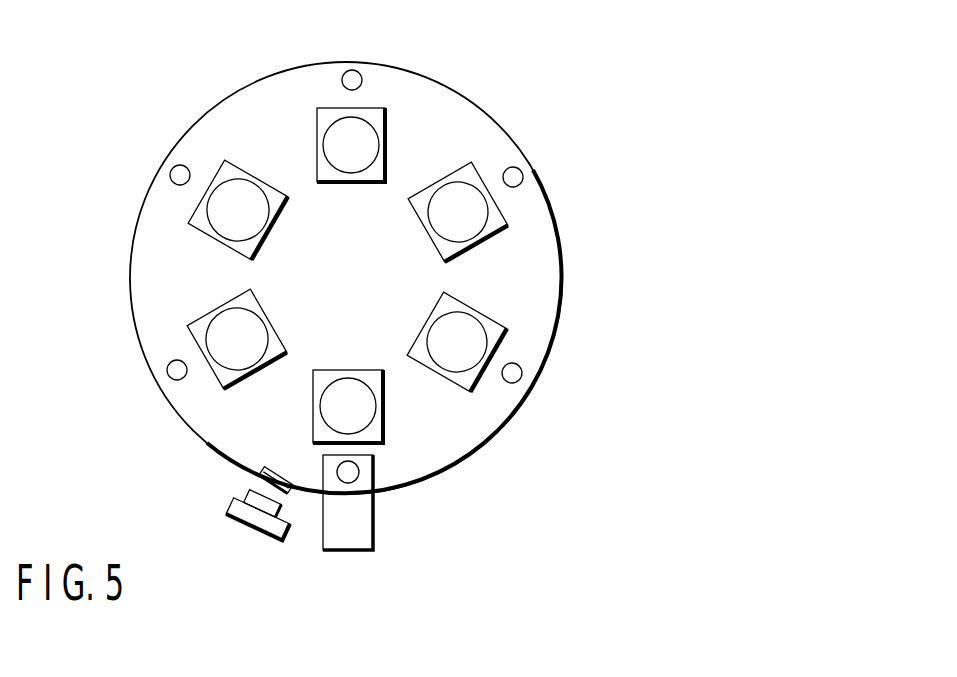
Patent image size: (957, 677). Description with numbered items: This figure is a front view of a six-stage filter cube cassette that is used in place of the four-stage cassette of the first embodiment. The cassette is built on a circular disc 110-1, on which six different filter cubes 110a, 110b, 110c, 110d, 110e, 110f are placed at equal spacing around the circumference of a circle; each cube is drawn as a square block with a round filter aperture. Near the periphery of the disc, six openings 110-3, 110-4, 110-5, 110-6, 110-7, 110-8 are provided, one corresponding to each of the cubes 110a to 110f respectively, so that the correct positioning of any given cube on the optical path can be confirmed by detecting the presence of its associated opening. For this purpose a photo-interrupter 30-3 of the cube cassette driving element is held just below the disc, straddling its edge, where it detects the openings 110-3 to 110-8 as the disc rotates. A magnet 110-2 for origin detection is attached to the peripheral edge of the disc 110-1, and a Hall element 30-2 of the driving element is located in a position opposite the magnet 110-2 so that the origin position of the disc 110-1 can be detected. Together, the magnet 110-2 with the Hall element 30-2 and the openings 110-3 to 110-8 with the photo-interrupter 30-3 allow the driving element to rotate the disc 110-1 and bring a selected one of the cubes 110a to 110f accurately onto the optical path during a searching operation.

The disc 110-1 is at (465, 460).
The magnet 110-2 is at (253, 480).
The opening 110-3 is at (357, 69).
The opening 110-4 is at (523, 174).
The opening 110-5 is at (523, 369).
The opening 110-6 is at (358, 478).
The opening 110-7 is at (167, 375).
The opening 110-8 is at (170, 174).
The cube 110a is at (388, 127).
The cube 110b is at (475, 163).
The cube 110c is at (488, 318).
The cube 110d is at (385, 400).
The cube 110e is at (220, 382).
The cube 110f is at (188, 220).
The Hall element 30-2 is at (258, 537).
The photo-interrupter 30-3 is at (366, 552).